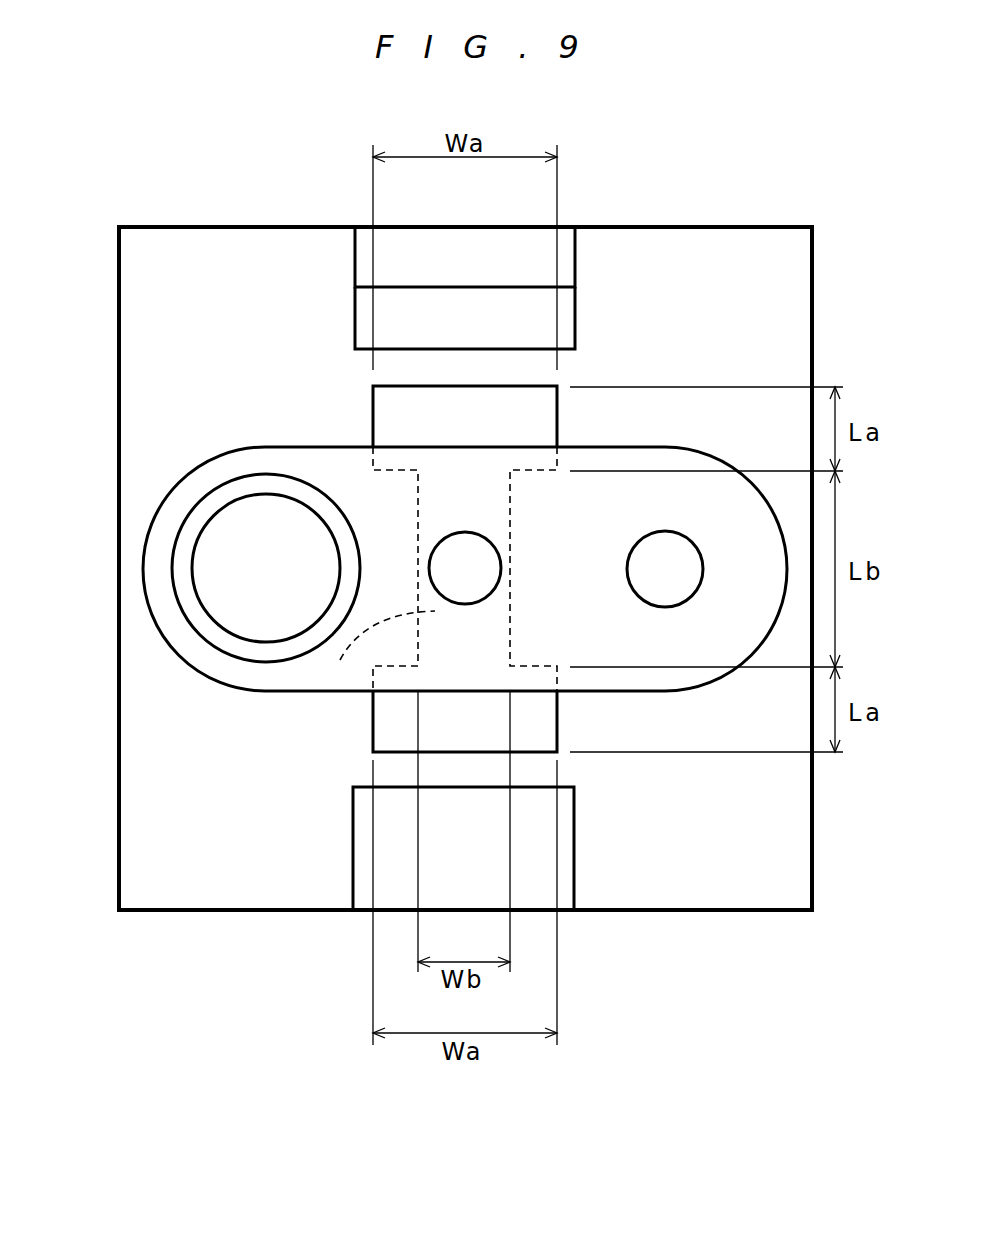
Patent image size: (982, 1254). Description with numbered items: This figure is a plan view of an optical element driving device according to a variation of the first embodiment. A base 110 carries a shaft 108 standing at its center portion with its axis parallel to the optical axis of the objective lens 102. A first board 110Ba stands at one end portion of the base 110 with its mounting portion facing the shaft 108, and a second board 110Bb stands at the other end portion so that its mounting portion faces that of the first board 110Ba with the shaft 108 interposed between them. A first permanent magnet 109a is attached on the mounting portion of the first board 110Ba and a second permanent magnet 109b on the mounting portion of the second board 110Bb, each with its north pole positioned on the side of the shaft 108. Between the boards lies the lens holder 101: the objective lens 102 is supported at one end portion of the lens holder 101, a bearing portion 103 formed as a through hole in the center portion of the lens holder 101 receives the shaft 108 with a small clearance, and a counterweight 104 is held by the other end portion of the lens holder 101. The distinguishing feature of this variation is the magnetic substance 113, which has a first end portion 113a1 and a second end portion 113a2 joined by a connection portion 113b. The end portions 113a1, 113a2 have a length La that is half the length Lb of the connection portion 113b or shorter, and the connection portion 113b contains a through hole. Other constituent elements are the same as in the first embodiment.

The lens holder 101 is at (632, 462).
The objective lens 102 is at (207, 563).
The bearing portion 103 is at (467, 605).
The counterweight 104 is at (645, 553).
The shaft 108 is at (463, 545).
The first permanent magnet 109a is at (568, 310).
The second permanent magnet 109b is at (565, 818).
The base 110 is at (805, 288).
The first board 110Ba is at (568, 266).
The second board 110Bb is at (565, 883).
The magnetic substance 113 is at (458, 569).
The first end portion 113a1 is at (385, 412).
The second end portion 113a2 is at (385, 710).
The connection portion 113b is at (371, 648).